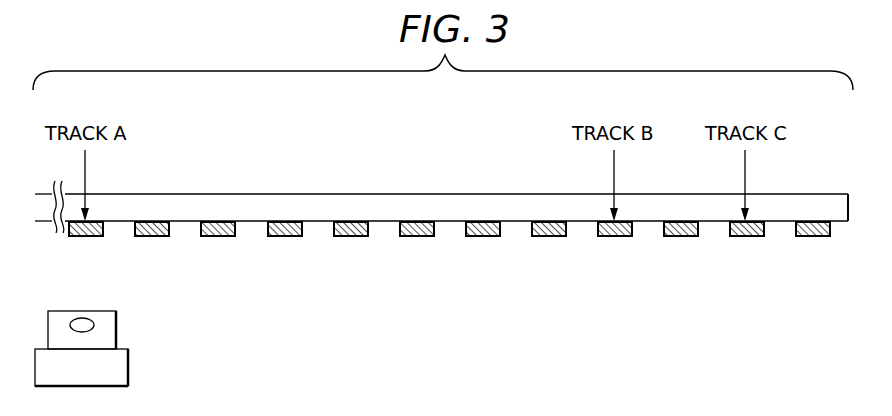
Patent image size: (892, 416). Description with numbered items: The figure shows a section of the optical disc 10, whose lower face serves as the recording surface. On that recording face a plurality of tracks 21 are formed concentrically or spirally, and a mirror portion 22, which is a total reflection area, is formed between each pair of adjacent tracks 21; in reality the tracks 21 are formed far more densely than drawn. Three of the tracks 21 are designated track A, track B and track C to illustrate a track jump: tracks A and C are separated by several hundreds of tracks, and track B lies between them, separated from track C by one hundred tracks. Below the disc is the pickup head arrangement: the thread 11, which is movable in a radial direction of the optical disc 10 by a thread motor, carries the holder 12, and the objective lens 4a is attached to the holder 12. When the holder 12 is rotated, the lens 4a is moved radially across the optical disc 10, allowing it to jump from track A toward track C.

The optical disc 10 is at (343, 194).
The tracks 21 is at (483, 237).
The mirror portion 22 is at (445, 223).
The thread 11 is at (130, 364).
The holder 12 is at (118, 326).
The objective lens 4a is at (80, 320).